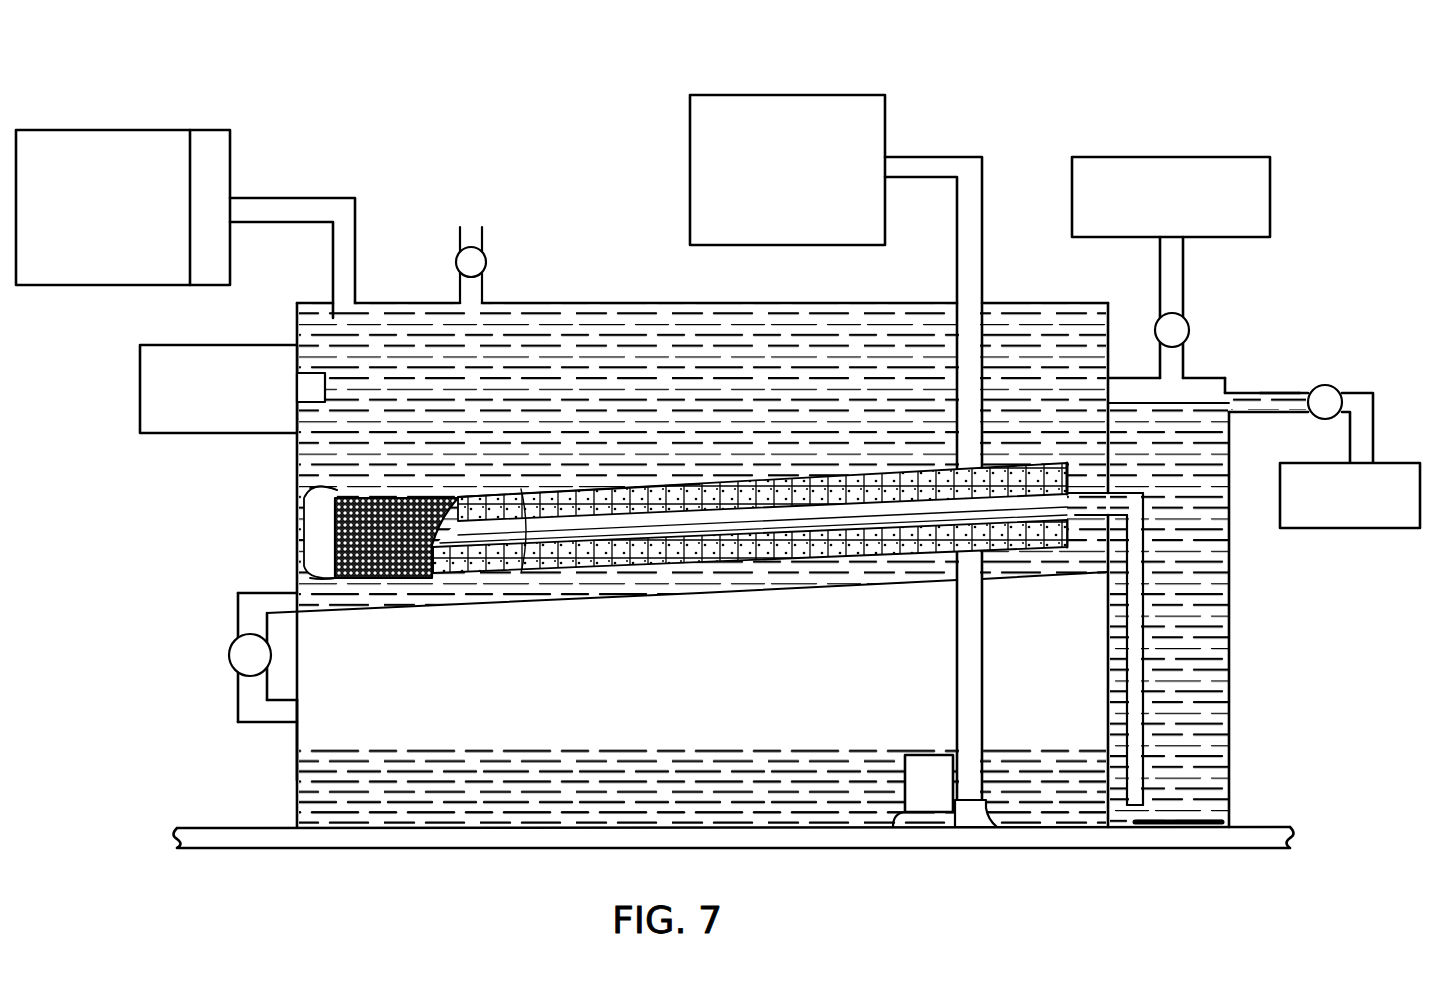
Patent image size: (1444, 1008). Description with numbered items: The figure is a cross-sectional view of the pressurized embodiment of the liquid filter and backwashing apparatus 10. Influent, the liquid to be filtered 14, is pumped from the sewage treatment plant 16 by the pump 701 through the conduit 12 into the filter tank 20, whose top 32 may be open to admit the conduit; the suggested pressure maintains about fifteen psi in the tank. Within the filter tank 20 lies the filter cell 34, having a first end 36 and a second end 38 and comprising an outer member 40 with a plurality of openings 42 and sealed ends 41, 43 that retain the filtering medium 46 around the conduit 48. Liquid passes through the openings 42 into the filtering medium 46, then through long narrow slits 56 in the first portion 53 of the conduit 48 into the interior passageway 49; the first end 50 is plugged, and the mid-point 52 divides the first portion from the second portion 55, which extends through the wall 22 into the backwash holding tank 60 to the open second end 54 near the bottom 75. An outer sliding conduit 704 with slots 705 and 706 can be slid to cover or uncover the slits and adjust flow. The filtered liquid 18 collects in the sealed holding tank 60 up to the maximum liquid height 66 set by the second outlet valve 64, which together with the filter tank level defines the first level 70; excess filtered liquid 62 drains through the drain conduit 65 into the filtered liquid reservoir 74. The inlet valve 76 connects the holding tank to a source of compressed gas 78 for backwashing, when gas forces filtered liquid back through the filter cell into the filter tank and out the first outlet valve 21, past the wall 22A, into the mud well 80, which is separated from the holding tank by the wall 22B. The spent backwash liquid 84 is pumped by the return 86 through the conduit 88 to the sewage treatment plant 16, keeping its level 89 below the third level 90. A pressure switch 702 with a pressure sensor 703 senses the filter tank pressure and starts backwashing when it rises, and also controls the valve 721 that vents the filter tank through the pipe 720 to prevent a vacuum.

The liquid filter and backwashing apparatus 10 is at (992, 160).
The conduit 12 is at (350, 198).
The liquid to be filtered 14 is at (390, 415).
The sewage treatment plant 16 is at (170, 130).
The filtered liquid 18 is at (1183, 503).
The filter tank 20 is at (297, 445).
The first outlet valve 21 is at (228, 658).
The wall 22 is at (1108, 368).
The wall 22A is at (950, 583).
The wall 22B is at (1110, 720).
The top 32 is at (518, 303).
The filter cell 34 is at (600, 426).
The first end 36 is at (335, 489).
The second end 38 is at (1077, 465).
The outer member 40 is at (395, 498).
The end of outer member 41 is at (304, 548).
The openings 42 is at (388, 598).
The end of outer member 43 is at (1000, 512).
The filtering medium 46 is at (813, 505).
The conduit 48 is at (725, 524).
The interior passageway 49 is at (668, 520).
The first end 50 is at (330, 578).
The mid-point 52 is at (1043, 505).
The first portion 53 is at (850, 552).
The second end 54 is at (1135, 808).
The second portion 55 is at (1150, 688).
The slits 56 is at (602, 525).
The backwash holding tank 60 is at (1230, 625).
The excess filtered liquid 62 is at (1298, 416).
The second outlet valve 64 is at (1325, 385).
The drain conduit 65 is at (1260, 393).
The maximum liquid height 66 is at (1290, 385).
The first level 70 is at (1195, 403).
The filtered liquid reservoir 74 is at (1395, 530).
The bottom 75 is at (1195, 819).
The inlet valve 76 is at (1185, 325).
The source of compressed gas 78 is at (1272, 175).
The mud well 80 is at (722, 726).
The spent backwash liquid 84 is at (545, 795).
The return 86 is at (920, 803).
The conduit 88 is at (980, 695).
The level 89 is at (300, 740).
The third level 90 is at (345, 752).
The pump 701 is at (231, 205).
The pressure switch 702 is at (140, 412).
The pressure sensor 703 is at (313, 373).
The outer sliding conduit 704 is at (470, 555).
The slot 705 is at (543, 550).
The slot 706 is at (573, 505).
The pipe 720 is at (487, 300).
The valve 721 is at (486, 278).